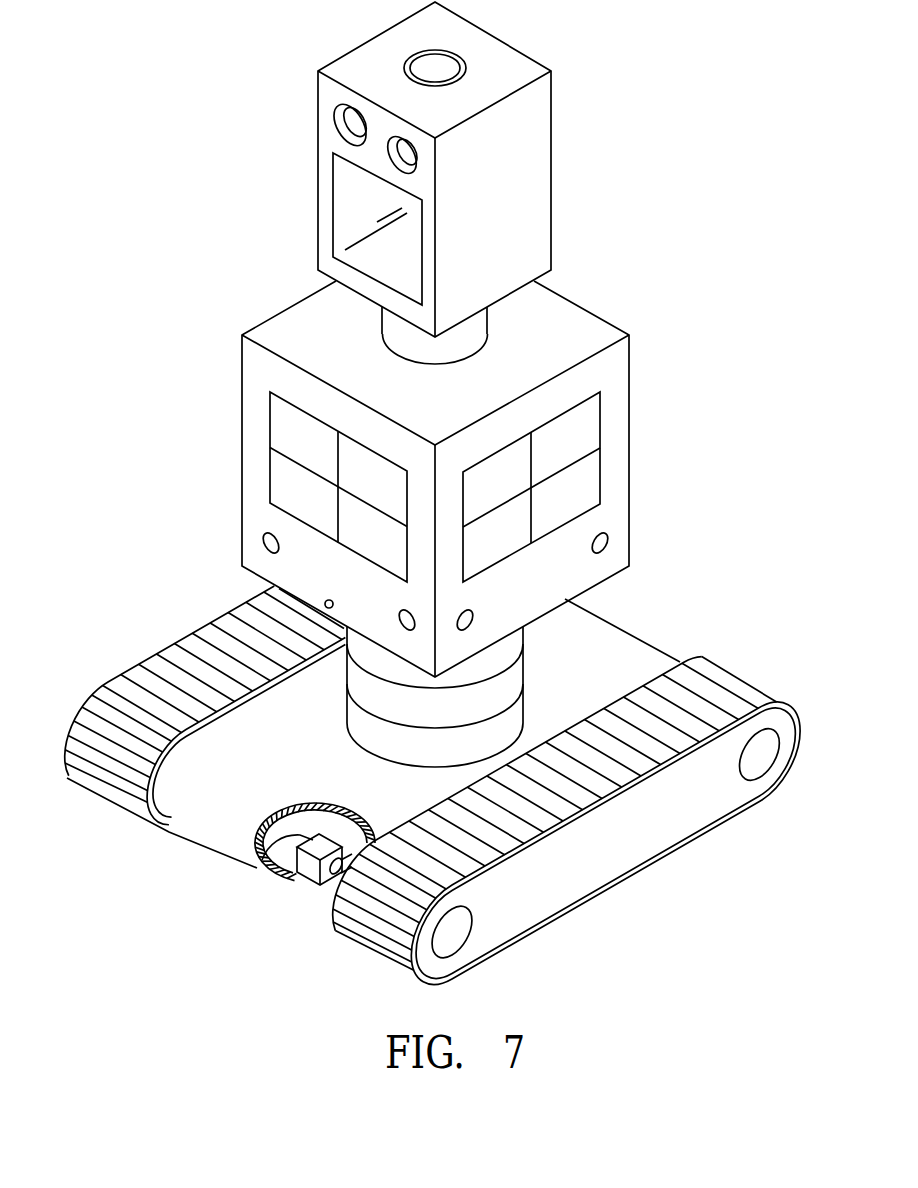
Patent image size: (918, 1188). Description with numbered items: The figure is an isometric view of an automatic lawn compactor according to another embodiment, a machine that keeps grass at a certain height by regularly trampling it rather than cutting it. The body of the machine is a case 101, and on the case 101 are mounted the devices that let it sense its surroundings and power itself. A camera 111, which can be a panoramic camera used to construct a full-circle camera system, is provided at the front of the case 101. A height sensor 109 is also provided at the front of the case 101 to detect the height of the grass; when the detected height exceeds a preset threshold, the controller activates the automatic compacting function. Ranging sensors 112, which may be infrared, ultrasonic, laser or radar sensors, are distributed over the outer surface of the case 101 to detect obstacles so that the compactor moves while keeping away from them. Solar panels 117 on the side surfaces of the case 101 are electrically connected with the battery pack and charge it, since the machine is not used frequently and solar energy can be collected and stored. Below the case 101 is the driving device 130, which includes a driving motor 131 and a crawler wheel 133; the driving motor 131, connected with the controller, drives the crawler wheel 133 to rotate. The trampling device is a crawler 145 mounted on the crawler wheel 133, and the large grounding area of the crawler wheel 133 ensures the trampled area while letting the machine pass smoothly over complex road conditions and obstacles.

The case 101 is at (615, 370).
The camera 111 is at (350, 125).
The solar panel 117 is at (283, 473).
The ranging sensor 112 is at (263, 543).
The height sensor 109 is at (327, 601).
The crawler 145 is at (731, 677).
The crawler wheel 133 is at (452, 932).
The driving motor 131 is at (257, 846).
The driving device 130 is at (302, 884).